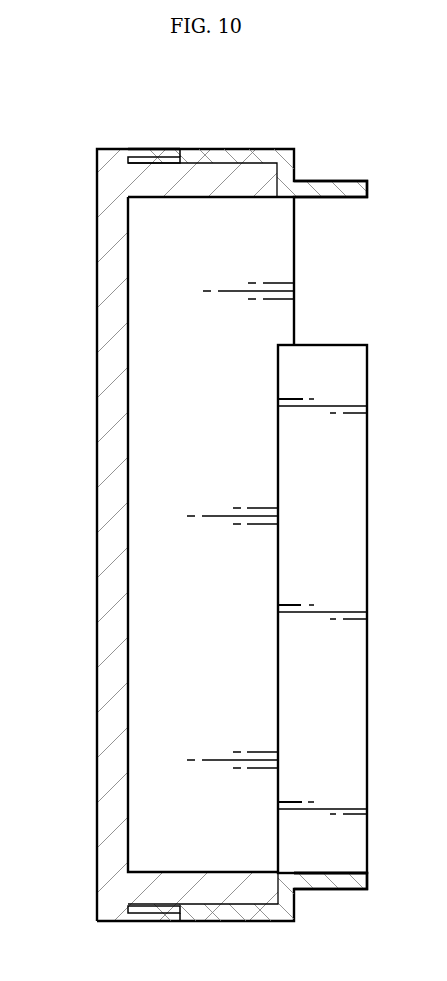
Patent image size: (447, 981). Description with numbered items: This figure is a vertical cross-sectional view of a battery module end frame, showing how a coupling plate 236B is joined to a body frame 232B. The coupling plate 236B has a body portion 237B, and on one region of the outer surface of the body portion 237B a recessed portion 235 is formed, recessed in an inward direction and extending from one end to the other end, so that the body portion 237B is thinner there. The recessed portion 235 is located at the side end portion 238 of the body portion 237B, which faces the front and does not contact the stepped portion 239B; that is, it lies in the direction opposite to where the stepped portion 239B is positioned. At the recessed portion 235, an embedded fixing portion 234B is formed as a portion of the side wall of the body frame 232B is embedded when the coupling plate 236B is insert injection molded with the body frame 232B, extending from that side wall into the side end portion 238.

The coupling plate 236B is at (300, 133).
The body frame 232B is at (105, 148).
The embedded fixing portion 234B is at (165, 152).
The body portion 237B is at (257, 148).
The stepped portion 239B is at (338, 181).
The side end portion 238 is at (128, 160).
The recessed portion 235 is at (153, 156).